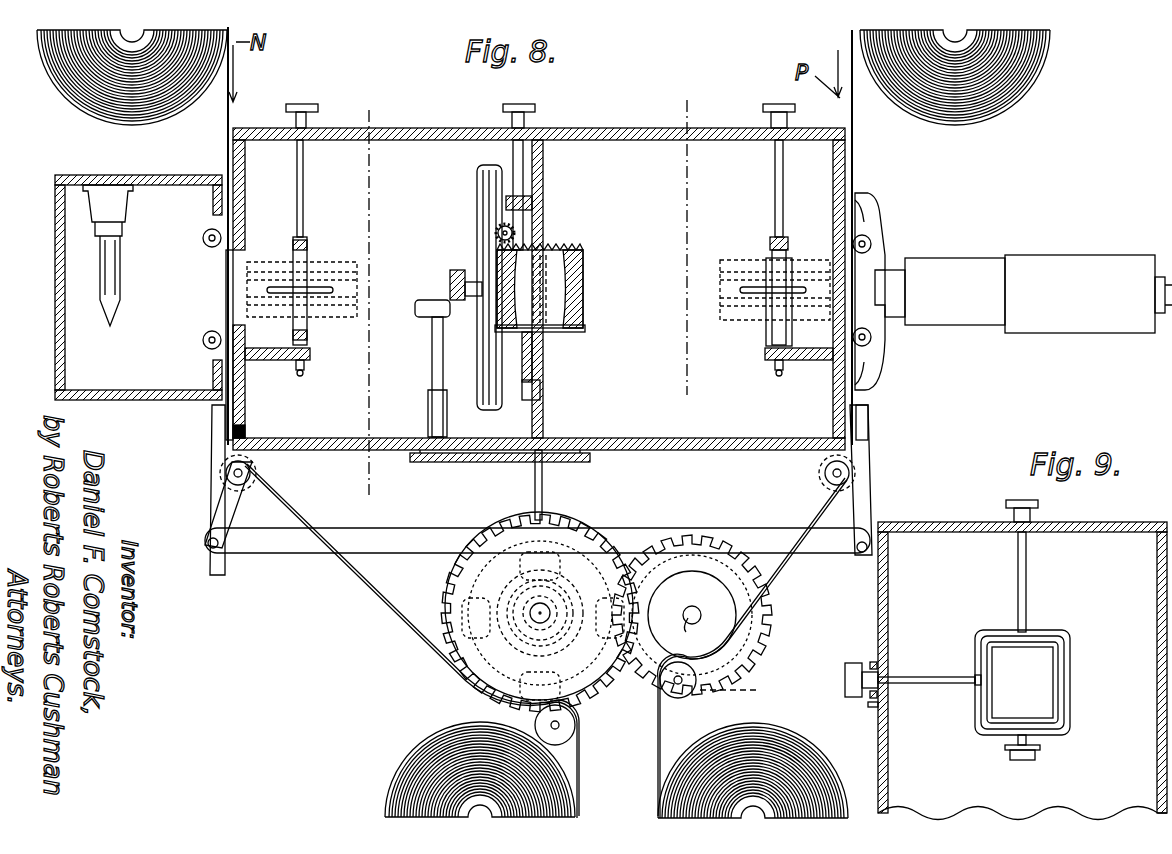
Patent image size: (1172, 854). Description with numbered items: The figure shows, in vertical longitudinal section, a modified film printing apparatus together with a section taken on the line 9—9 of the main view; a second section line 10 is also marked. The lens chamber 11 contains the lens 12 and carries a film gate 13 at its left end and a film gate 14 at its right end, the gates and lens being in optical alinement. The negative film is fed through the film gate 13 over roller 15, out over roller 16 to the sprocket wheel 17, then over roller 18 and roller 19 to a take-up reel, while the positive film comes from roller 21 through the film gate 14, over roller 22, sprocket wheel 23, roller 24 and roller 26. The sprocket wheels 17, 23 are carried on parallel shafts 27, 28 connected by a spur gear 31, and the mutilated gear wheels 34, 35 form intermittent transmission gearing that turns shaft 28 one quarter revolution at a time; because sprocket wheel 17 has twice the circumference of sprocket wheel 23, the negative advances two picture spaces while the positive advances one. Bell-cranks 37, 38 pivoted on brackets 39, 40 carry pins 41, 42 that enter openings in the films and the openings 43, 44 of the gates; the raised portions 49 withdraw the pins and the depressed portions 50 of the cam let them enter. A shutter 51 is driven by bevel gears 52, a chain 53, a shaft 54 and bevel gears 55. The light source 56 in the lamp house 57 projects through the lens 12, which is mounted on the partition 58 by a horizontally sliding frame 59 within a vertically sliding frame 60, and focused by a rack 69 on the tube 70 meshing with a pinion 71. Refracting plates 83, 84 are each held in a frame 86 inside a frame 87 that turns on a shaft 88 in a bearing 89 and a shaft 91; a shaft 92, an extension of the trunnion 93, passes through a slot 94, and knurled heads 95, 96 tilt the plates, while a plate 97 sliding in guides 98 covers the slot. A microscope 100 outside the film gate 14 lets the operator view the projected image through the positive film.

In FIG. 8, the section line 9— 9 is at (700, 110).
In FIG. 8, the section line 10— 10 is at (384, 116).
In FIG. 8, the lens chamber 11 is at (603, 126).
In FIG. 8, the lens 12 is at (580, 254).
In FIG. 8, the film gate 13 is at (226, 262).
In FIG. 8, the film gate 14 is at (856, 232).
In FIG. 8, the roller 15 is at (205, 98).
In FIG. 8, the roller 16 is at (252, 478).
In FIG. 8, the sprocket wheel 17 is at (455, 652).
In FIG. 8, the roller 18 is at (563, 728).
In FIG. 8, the roller 19 is at (555, 795).
In FIG. 8, the roller 21 is at (903, 106).
In FIG. 8, the roller 22 is at (852, 474).
In FIG. 8, the sprocket wheel 23 is at (732, 632).
In FIG. 8, the roller 24 is at (500, 390).
In FIG. 8, the roller 26 is at (805, 752).
In FIG. 8, the shaft 27 is at (548, 620).
In FIG. 8, the shaft 28 is at (692, 615).
In FIG. 8, the spur gear 31 is at (772, 612).
In FIG. 8, the mutilated spur gear wheel 34 is at (462, 690).
In FIG. 8, the mutilated spur gear wheel 35 is at (747, 681).
In FIG. 8, the bell-crank 37 is at (213, 478).
In FIG. 8, the bell-crank 38 is at (870, 508).
In FIG. 8, the bracket 39 is at (228, 548).
In FIG. 8, the bracket 40 is at (840, 488).
In FIG. 8, the pin 41 is at (228, 432).
In FIG. 8, the pin 42 is at (868, 424).
In FIG. 8, the opening 43 is at (240, 432).
In FIG. 8, the opening 44 is at (832, 436).
In FIG. 8, the raised portion 49 is at (446, 578).
In FIG. 8, the depressed portion 50 is at (462, 620).
In FIG. 8, the shutter 51 is at (478, 202).
In FIG. 8, the bevel gears 52 is at (440, 298).
In FIG. 8, the chain 53 is at (478, 463).
In FIG. 8, the shaft 54 is at (542, 486).
In FIG. 8, the bevel gears 55 is at (598, 524).
In FIG. 8, the light source 56 is at (110, 326).
In FIG. 8, the lamp house 57 is at (57, 378).
In FIG. 8, the partition 58 is at (543, 400).
In FIG. 8, the frame 59 is at (535, 340).
In FIG. 8, the frame 60 is at (540, 374).
In FIG. 8, the rack 69 is at (523, 240).
In FIG. 8, the tube 70 is at (585, 288).
In FIG. 8, the pinion 71 is at (497, 234).
In FIG. 8, the plate of refracting material 83 is at (770, 250).
In FIG. 8, the plate of refracting material 84 is at (307, 256).
In FIG. 8, the frame 86 is at (768, 338).
In FIG. 9, the frame 86 is at (1045, 640).
In FIG. 9, the frame 87 is at (1070, 726).
In FIG. 8, the shaft 88 is at (775, 366).
In FIG. 9, the shaft 88 is at (1015, 750).
In FIG. 8, the bearing 89 is at (781, 374).
In FIG. 9, the bearing 89 is at (1036, 756).
In FIG. 8, the shaft 91 is at (775, 176).
In FIG. 9, the shaft 91 is at (1018, 555).
In FIG. 9, the shaft 92 is at (936, 676).
In FIG. 9, the trunnion 93 is at (978, 682).
In FIG. 8, the slot 94 is at (742, 272).
In FIG. 9, the slot 94 is at (882, 676).
In FIG. 9, the knurled head 95 is at (860, 662).
In FIG. 8, the knurled head 96 is at (790, 106).
In FIG. 9, the knurled head 96 is at (1015, 502).
In FIG. 9, the plate 97 is at (880, 696).
In FIG. 9, the guides 98 is at (872, 706).
In FIG. 8, the microscope 100 is at (985, 262).